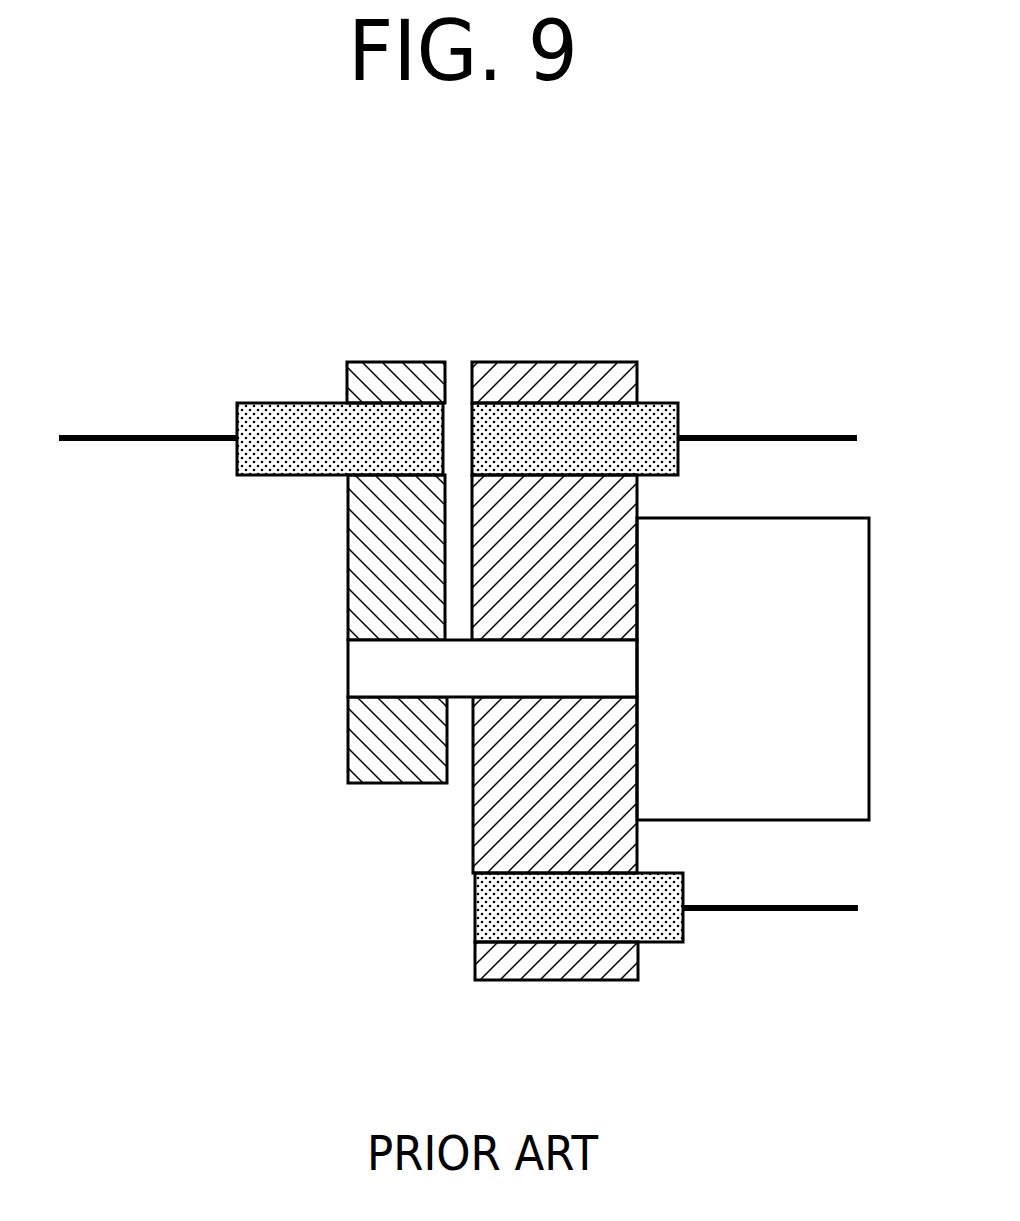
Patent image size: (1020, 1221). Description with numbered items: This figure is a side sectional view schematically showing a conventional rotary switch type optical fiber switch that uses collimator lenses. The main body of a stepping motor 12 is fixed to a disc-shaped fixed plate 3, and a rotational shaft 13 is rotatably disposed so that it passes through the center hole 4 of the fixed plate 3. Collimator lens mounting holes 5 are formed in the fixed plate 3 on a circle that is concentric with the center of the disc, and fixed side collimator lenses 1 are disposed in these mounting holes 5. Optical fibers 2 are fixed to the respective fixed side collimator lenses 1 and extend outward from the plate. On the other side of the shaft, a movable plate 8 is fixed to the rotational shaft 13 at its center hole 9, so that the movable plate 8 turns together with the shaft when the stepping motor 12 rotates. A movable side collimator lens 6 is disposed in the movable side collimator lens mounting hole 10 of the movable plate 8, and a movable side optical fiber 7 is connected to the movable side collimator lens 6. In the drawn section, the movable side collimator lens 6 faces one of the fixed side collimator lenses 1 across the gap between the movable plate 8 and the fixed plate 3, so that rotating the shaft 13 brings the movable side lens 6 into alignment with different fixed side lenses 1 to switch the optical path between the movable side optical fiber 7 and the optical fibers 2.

The fixed side collimator lens 1 is at (655, 420).
The optical fiber 2 is at (795, 437).
The fixed plate 3 is at (605, 365).
The center hole 4 is at (545, 697).
The collimator lens mounting hole 5 is at (520, 410).
The movable side collimator lens 6 is at (277, 420).
The movable side optical fiber 7 is at (117, 440).
The movable plate 8 is at (398, 378).
The center hole 9 is at (400, 697).
The movable side collimator lens mounting hole 10 is at (400, 470).
The stepping motor 12 is at (840, 675).
The rotational shaft 13 is at (370, 650).